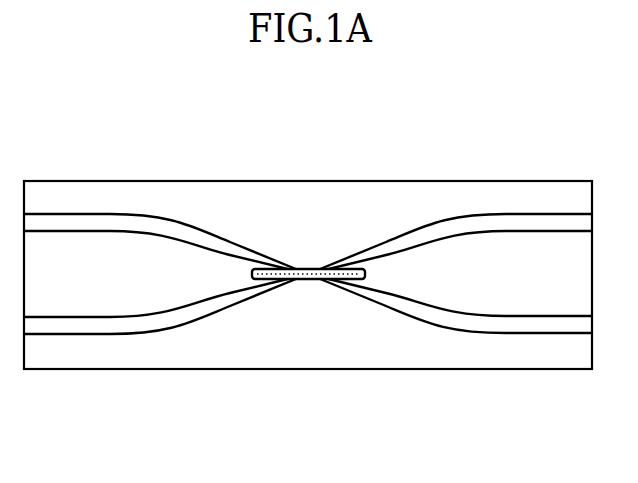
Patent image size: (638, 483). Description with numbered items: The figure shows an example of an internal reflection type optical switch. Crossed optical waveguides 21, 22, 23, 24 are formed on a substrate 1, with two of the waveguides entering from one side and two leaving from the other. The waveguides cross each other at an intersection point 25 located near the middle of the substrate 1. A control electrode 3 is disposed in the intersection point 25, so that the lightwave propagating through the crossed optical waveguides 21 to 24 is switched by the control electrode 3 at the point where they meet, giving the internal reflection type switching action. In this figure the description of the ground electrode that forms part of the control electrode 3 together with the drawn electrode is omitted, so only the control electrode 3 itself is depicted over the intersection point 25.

The substrate 1 is at (413, 203).
The optical waveguide 21 is at (113, 223).
The optical waveguide 22 is at (107, 324).
The optical waveguide 23 is at (518, 220).
The optical waveguide 24 is at (517, 323).
The control electrode 3 is at (309, 278).
The intersection point 25 is at (308, 245).